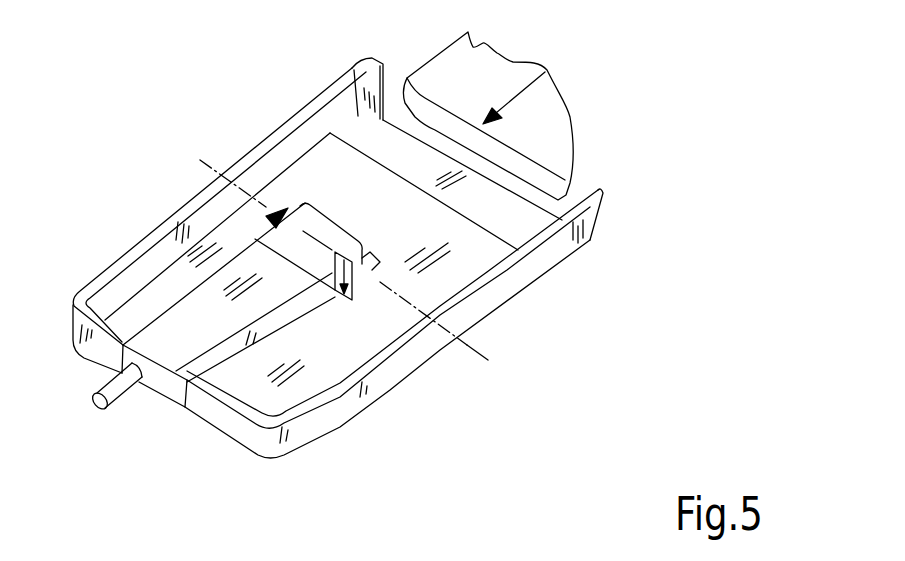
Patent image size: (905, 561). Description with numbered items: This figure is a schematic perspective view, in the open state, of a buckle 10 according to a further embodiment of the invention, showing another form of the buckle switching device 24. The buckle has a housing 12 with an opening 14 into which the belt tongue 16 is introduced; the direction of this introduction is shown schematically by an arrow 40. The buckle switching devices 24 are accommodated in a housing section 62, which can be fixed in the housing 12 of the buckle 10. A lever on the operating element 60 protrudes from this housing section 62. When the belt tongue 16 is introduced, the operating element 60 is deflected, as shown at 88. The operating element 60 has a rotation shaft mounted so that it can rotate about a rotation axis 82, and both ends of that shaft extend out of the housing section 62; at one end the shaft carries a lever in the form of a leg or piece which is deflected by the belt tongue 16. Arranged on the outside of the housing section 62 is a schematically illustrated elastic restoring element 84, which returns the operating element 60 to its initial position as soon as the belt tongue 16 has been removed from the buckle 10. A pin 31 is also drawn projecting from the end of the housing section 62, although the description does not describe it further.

The buckle 10 is at (598, 145).
The housing 12 is at (503, 290).
The opening 14 is at (385, 166).
The belt tongue 16 is at (542, 118).
The buckle switching device 24 is at (163, 388).
The pin 31 is at (110, 386).
The arrow 40 is at (510, 88).
The operating element 60 is at (353, 287).
The housing section 62 is at (228, 360).
The rotation axis 82 is at (468, 348).
The elastic restoring element 84 is at (280, 203).
The deflection of the operating element 88 is at (302, 287).